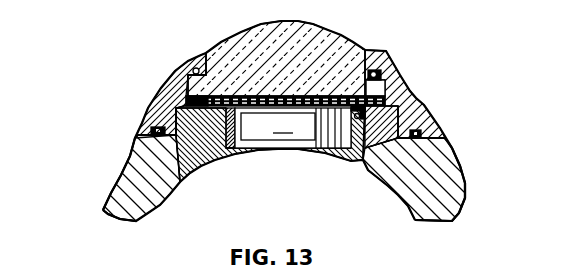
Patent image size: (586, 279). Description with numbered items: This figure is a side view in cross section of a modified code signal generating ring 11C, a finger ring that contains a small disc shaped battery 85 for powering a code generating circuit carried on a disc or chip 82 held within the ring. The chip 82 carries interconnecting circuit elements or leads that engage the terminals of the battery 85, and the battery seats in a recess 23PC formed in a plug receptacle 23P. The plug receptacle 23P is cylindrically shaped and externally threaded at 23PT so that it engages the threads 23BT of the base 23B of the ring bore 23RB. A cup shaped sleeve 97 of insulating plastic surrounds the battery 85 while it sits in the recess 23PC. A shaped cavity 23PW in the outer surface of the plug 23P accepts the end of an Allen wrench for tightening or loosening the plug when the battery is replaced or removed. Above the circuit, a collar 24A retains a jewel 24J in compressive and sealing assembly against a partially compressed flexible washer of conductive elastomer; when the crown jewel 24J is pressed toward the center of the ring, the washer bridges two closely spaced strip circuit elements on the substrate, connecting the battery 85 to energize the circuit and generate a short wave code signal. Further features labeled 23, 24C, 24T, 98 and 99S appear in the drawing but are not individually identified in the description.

The code signal generating ring 11C is at (92, 204).
The rim 23 is at (471, 194).
The base of the ring bore 23B is at (397, 140).
The threads of the base 23BT is at (360, 150).
The ring bore 23RB is at (205, 148).
The plug receptacle 23P is at (340, 148).
The external threads of the plug receptacle 23PT is at (200, 150).
The shaped cavity 23PW is at (283, 148).
The recess 23PC is at (313, 148).
The collar 24A is at (394, 66).
The hub clamp 24C is at (186, 60).
The jewel 24J is at (334, 43).
The hub tab 24T is at (391, 110).
The circuit disc or chip 82 is at (379, 90).
The disc shaped battery 85 is at (293, 128).
The cup shaped sleeve 97 is at (248, 148).
The fastener 98 is at (370, 63).
The seal 99S is at (180, 88).